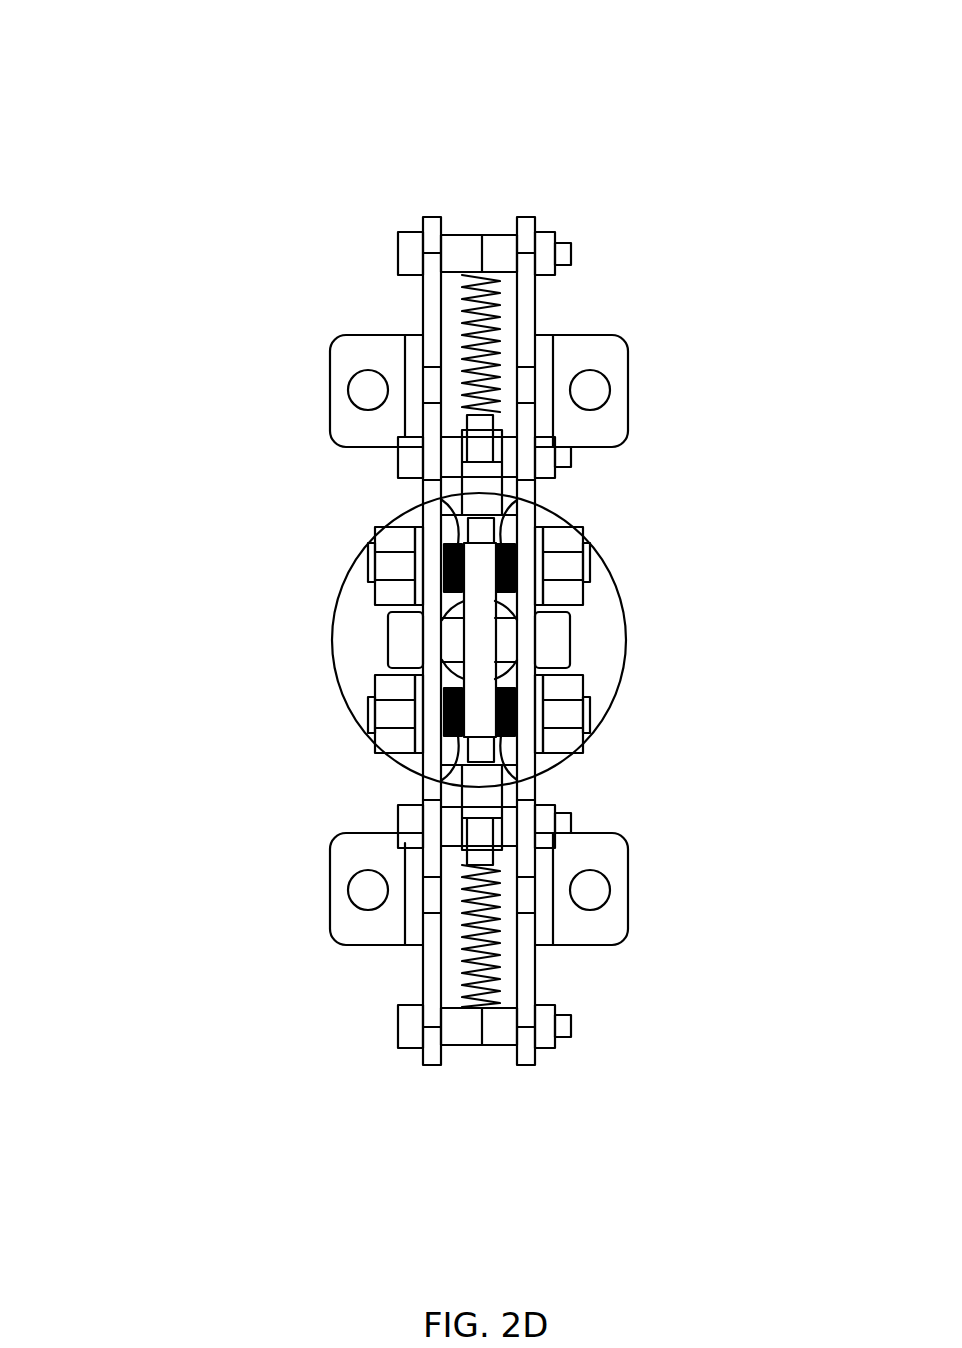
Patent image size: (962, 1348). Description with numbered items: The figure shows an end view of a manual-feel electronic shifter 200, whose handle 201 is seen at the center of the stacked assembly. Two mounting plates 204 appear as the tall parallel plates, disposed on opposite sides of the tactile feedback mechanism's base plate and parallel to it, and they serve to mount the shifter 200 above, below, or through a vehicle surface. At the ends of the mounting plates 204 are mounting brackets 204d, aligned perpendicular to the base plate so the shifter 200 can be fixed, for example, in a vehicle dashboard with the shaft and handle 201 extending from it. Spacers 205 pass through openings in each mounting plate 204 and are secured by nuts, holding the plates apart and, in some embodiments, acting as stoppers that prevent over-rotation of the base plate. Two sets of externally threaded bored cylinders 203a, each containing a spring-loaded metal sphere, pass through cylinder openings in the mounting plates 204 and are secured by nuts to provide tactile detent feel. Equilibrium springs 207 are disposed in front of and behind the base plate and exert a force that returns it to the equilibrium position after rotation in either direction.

The shifter 200 is at (128, 66).
The handle 201 is at (628, 634).
The externally threaded bored cylinders 203a is at (420, 506).
The mounting plates 204 is at (423, 969).
The mounting brackets 204d is at (330, 390).
The spacers 205 is at (470, 234).
The equilibrium springs 207 is at (488, 327).